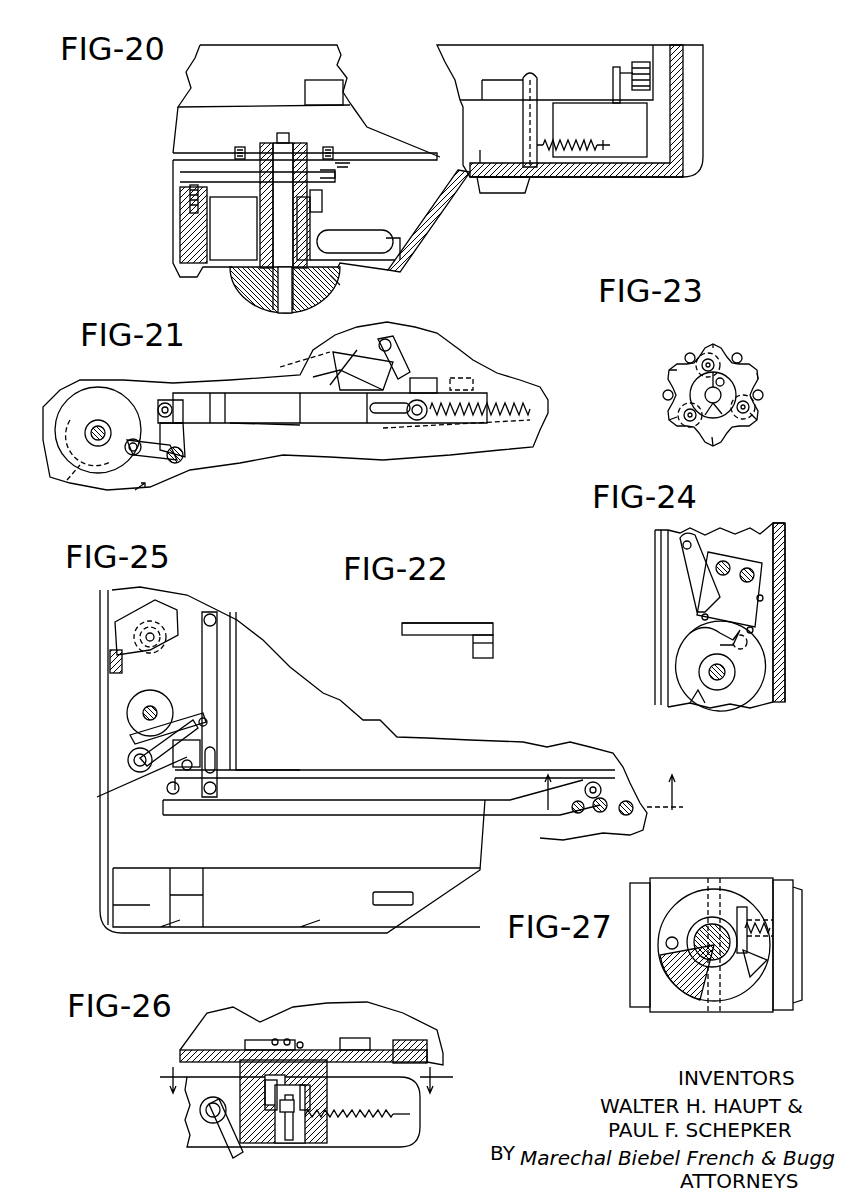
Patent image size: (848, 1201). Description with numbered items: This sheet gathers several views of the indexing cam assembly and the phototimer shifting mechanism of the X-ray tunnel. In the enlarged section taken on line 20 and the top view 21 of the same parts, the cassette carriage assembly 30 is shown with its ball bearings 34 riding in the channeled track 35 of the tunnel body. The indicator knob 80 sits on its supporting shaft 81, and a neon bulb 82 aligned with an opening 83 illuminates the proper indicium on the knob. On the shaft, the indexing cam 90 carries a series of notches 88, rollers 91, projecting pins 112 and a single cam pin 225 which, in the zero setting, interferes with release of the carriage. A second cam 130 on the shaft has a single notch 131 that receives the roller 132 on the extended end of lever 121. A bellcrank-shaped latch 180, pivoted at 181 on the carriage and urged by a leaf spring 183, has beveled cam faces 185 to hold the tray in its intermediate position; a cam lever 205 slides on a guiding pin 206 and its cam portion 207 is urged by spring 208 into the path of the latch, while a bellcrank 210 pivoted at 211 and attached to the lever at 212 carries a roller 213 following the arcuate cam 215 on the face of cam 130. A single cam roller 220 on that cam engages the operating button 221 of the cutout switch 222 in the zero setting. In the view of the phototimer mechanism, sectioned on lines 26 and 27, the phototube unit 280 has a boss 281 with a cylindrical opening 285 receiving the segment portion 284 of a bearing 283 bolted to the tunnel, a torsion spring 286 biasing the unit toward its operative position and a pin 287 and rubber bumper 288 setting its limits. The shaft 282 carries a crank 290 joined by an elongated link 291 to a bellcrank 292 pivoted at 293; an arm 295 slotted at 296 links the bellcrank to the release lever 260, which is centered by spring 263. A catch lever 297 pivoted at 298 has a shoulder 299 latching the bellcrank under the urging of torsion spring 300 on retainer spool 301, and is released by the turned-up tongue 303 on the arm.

In FIG. 20, the section line 20— 20 is at (325, 62).
In FIG. 25, the section line 20— 20 is at (307, 927).
In FIG. 26, the section line 20— 20 is at (187, 1053).
In FIG. 20, the top view of indexing parts 21 is at (693, 108).
In FIG. 25, the section line 26— 26 is at (611, 808).
In FIG. 26, the section line 27— 27 is at (303, 1079).
In FIG. 20, the cassette carriage assembly 30 is at (183, 125).
In FIG. 20, the ball bearings 34 is at (633, 62).
In FIG. 20, the channeled track 35 is at (640, 58).
In FIG. 20, the indicator knob 80 is at (232, 302).
In FIG. 20, the supporting shaft 81 is at (280, 143).
In FIG. 21, the supporting shaft 81 is at (100, 440).
In FIG. 23, the supporting shaft 81 is at (710, 395).
In FIG. 24, the supporting shaft 81 is at (713, 677).
In FIG. 20, the neon bulb 82 is at (333, 247).
In FIG. 24, the neon bulb 82 is at (692, 575).
In FIG. 20, the opening 83 is at (330, 280).
In FIG. 23, the notches 88 is at (713, 348).
In FIG. 20, the indexing cam 90 is at (340, 163).
In FIG. 23, the indexing cam 90 is at (739, 335).
In FIG. 20, the rollers 91 is at (327, 170).
In FIG. 23, the rollers 91 is at (705, 362).
In FIG. 20, the pins 112 is at (240, 152).
In FIG. 23, the pins 112 is at (690, 355).
In FIG. 20, the lever 121 is at (182, 190).
In FIG. 20, the cam 130 is at (330, 192).
In FIG. 21, the cam 130 is at (87, 410).
In FIG. 24, the cam 130 is at (727, 707).
In FIG. 24, the notch 131 is at (698, 702).
In FIG. 20, the roller 132 is at (218, 225).
In FIG. 21, the latch 180 is at (408, 355).
In FIG. 22, the latch 180 is at (453, 633).
In FIG. 21, the pivot 181 is at (383, 338).
In FIG. 22, the pivot 181 is at (435, 627).
In FIG. 21, the leaf spring 183 is at (313, 377).
In FIG. 21, the beveled cam faces 185 is at (320, 343).
In FIG. 22, the beveled cam faces 185 is at (487, 640).
In FIG. 20, the cam lever 205 is at (480, 163).
In FIG. 21, the cam lever 205 is at (320, 417).
In FIG. 20, the guiding pin 206 is at (533, 97).
In FIG. 21, the guiding pin 206 is at (418, 420).
In FIG. 20, the cam portion 207 is at (482, 80).
In FIG. 21, the cam portion 207 is at (437, 378).
In FIG. 20, the spring 208 is at (577, 140).
In FIG. 21, the spring 208 is at (467, 417).
In FIG. 21, the bellcrank 210 is at (183, 437).
In FIG. 21, the pivot 211 is at (180, 460).
In FIG. 21, the pivot 212 is at (165, 403).
In FIG. 21, the roller 213 is at (140, 457).
In FIG. 20, the arcuate cam 215 is at (328, 188).
In FIG. 21, the arcuate cam 215 is at (127, 483).
In FIG. 20, the cam roller 220 is at (312, 210).
In FIG. 21, the cam roller 220 is at (67, 480).
In FIG. 24, the cam roller 220 is at (745, 642).
In FIG. 24, the operating button 221 is at (688, 642).
In FIG. 24, the cutout switch 222 is at (713, 597).
In FIG. 20, the cam pin 225 is at (288, 143).
In FIG. 23, the cam pin 225 is at (733, 385).
In FIG. 25, the release lever 260 is at (190, 613).
In FIG. 25, the spring 263 is at (110, 657).
In FIG. 26, the phototube unit 280 is at (200, 1140).
In FIG. 26, the boss 281 is at (307, 1147).
In FIG. 27, the boss 281 is at (738, 1005).
In FIG. 26, the shaft 282 is at (290, 1123).
In FIG. 27, the shaft 282 is at (727, 937).
In FIG. 26, the bearing 283 is at (270, 1070).
In FIG. 27, the segment portion 284 is at (693, 987).
In FIG. 26, the cylindrical opening 285 is at (260, 1090).
In FIG. 27, the cylindrical opening 285 is at (683, 910).
In FIG. 26, the torsion spring 286 is at (290, 1100).
In FIG. 27, the torsion spring 286 is at (693, 933).
In FIG. 26, the pin 287 is at (257, 1147).
In FIG. 27, the pin 287 is at (668, 943).
In FIG. 26, the rubber bumper 288 is at (320, 1100).
In FIG. 27, the rubber bumper 288 is at (757, 960).
In FIG. 25, the crank 290 is at (608, 797).
In FIG. 26, the crank 290 is at (293, 1050).
In FIG. 25, the elongated link 291 is at (420, 807).
In FIG. 26, the elongated link 291 is at (253, 1048).
In FIG. 25, the bellcrank 292 is at (167, 785).
In FIG. 25, the pivot 293 is at (122, 787).
In FIG. 25, the arm 295 is at (215, 640).
In FIG. 25, the slot 296 is at (217, 760).
In FIG. 25, the catch lever 297 is at (147, 745).
In FIG. 25, the pivot 298 is at (128, 760).
In FIG. 25, the shoulder 299 is at (210, 730).
In FIG. 25, the torsion spring 300 is at (172, 700).
In FIG. 25, the retainer spool 301 is at (140, 733).
In FIG. 25, the turned-up tongue 303 is at (207, 720).